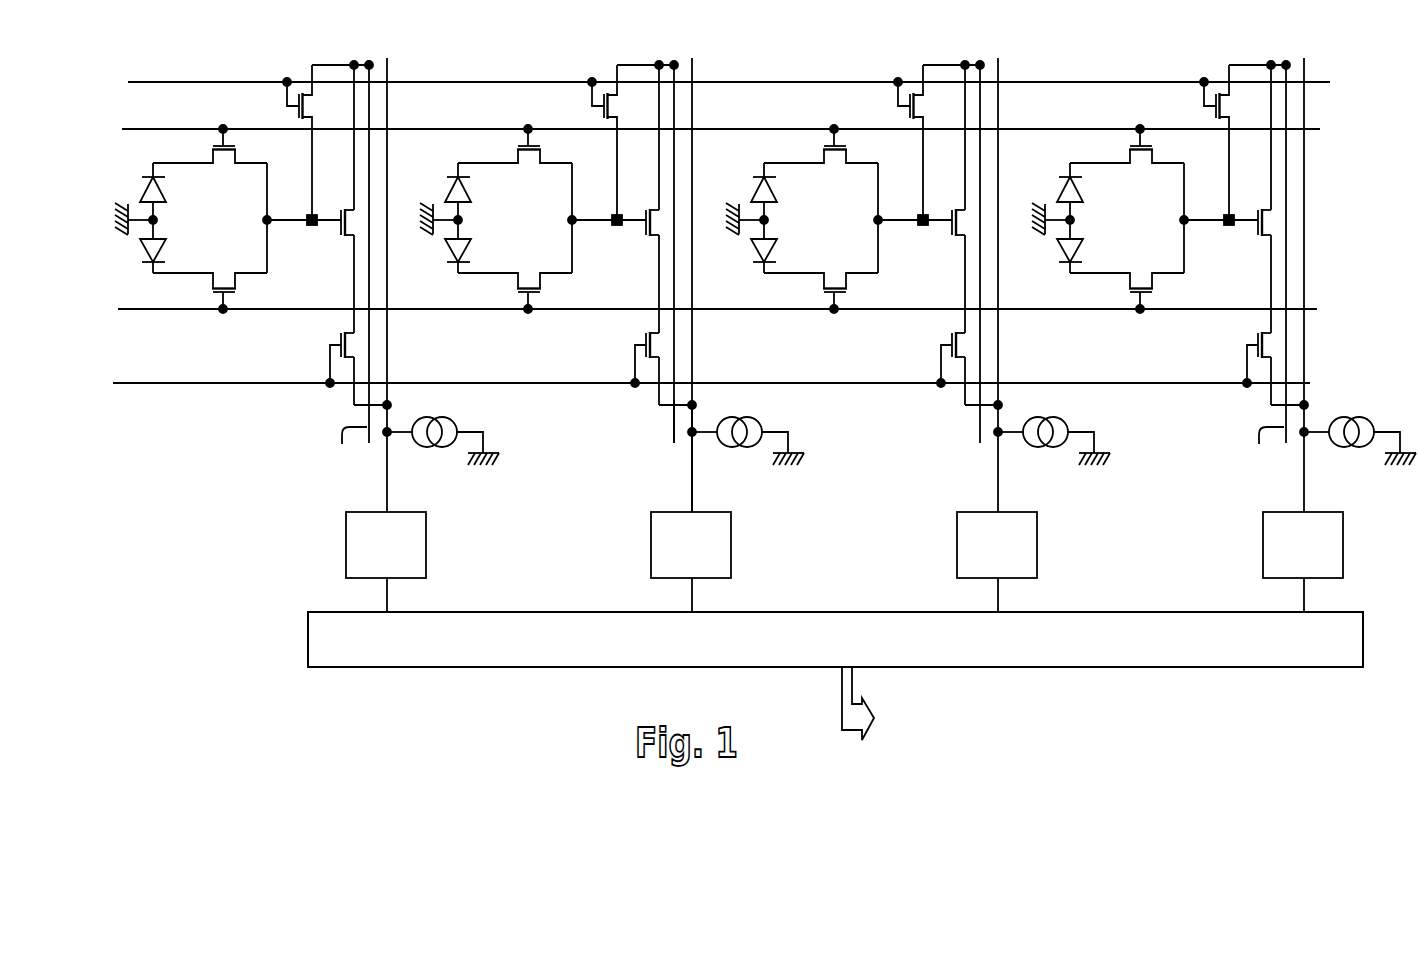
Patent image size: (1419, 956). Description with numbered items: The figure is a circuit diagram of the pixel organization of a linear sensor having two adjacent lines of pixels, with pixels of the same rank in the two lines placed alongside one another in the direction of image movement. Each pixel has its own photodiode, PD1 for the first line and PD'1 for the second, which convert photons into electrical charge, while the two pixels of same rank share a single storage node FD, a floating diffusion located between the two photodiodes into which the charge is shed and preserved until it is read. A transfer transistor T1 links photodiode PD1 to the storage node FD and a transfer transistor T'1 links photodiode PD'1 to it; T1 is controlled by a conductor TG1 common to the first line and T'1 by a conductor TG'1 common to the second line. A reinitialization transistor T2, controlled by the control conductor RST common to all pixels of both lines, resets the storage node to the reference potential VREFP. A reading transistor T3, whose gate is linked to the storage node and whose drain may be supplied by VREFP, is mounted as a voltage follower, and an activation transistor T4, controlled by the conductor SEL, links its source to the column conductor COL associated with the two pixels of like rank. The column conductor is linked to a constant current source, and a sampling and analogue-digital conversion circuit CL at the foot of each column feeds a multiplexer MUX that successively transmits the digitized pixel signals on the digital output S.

The control conductor RST is at (721, 69).
The conductor TG1 is at (702, 116).
The conductor TG'1 is at (697, 295).
The conductor SEL is at (695, 395).
The photodiode PD1 is at (436, 191).
The photodiode PD'1 is at (433, 247).
The transfer transistor T1 is at (515, 158).
The transfer transistor T'1 is at (515, 281).
The reinitialization transistor T2 is at (617, 142).
The reading transistor T3 is at (644, 210).
The activation transistor T4 is at (635, 351).
The storage node FD is at (607, 218).
The reference potential VREFP is at (787, 436).
The column conductor COL is at (692, 490).
The sampling and conversion circuit CL is at (709, 545).
The multiplexer MUX is at (835, 639).
The digital output S is at (878, 703).